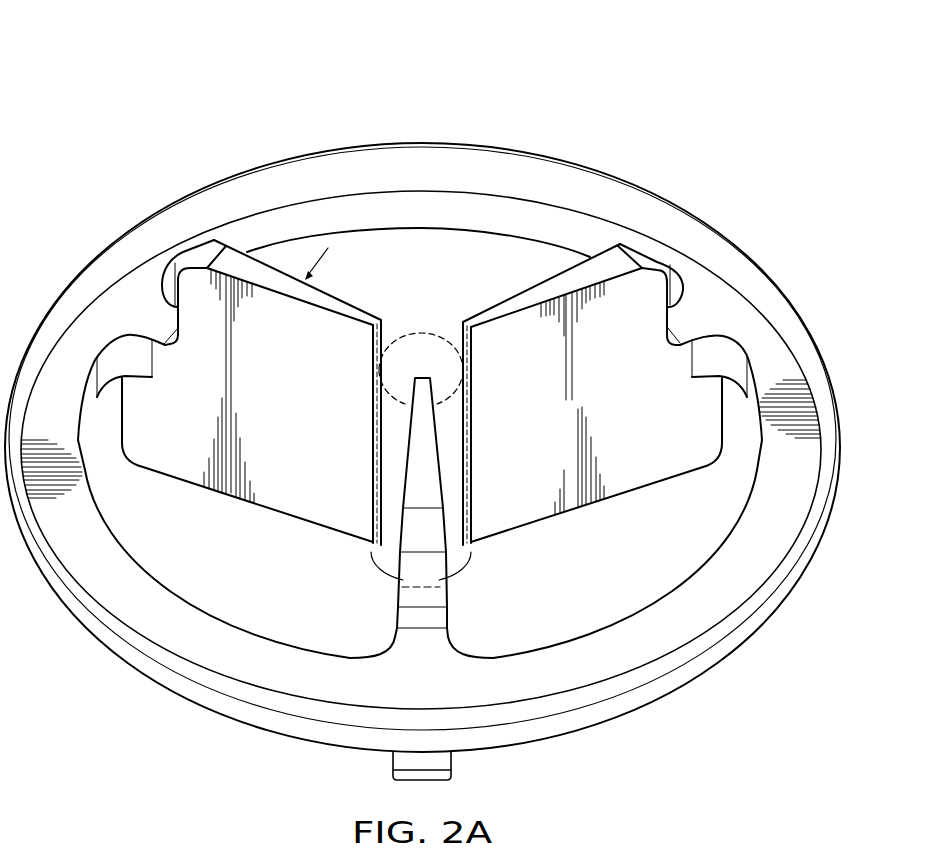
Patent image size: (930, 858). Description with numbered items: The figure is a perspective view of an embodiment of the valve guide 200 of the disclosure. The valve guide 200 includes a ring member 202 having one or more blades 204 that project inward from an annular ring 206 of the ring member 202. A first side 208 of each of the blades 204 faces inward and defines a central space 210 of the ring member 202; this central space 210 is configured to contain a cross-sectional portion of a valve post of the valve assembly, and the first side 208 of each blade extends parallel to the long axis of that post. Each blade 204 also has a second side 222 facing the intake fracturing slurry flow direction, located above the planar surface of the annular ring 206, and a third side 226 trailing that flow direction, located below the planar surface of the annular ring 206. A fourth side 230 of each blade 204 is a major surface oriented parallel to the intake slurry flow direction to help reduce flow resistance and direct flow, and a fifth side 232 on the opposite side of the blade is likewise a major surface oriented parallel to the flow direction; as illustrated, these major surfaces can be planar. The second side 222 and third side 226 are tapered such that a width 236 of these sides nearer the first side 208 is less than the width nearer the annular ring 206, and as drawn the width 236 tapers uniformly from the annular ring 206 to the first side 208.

The valve guide 200 is at (183, 57).
The ring member 202 is at (708, 186).
The blades 204 is at (354, 300).
The annular ring 206 is at (88, 266).
The first side 208 is at (373, 503).
The central space 210 is at (397, 432).
The second side 222 is at (243, 268).
The third side 226 is at (290, 517).
The fourth side 230 is at (638, 492).
The fifth side 232 is at (549, 280).
The width 236 is at (284, 304).